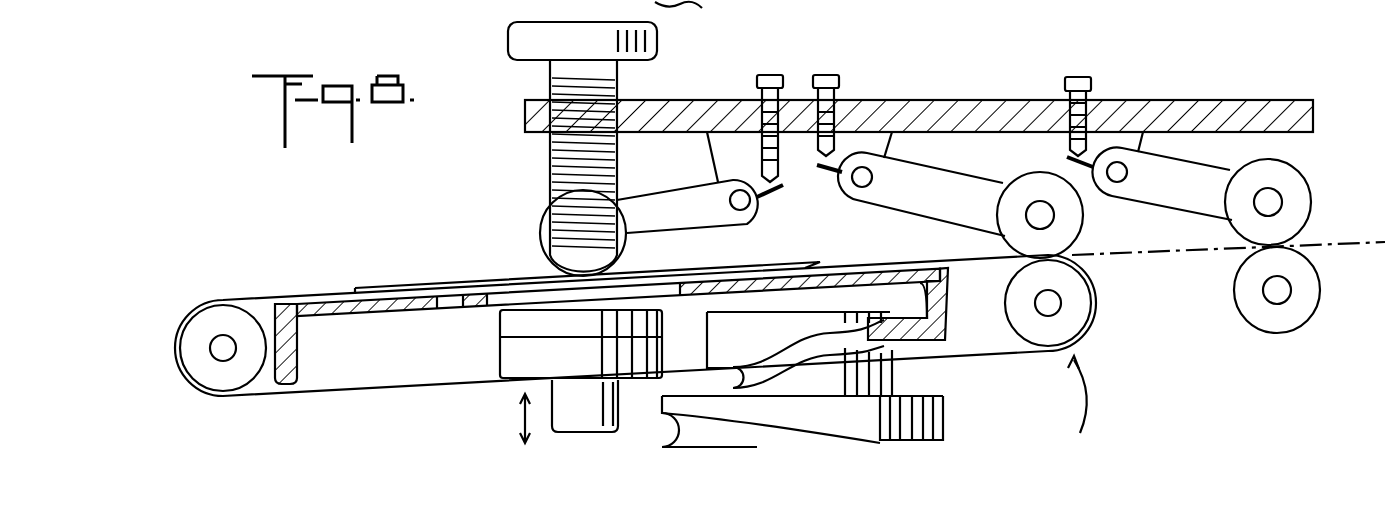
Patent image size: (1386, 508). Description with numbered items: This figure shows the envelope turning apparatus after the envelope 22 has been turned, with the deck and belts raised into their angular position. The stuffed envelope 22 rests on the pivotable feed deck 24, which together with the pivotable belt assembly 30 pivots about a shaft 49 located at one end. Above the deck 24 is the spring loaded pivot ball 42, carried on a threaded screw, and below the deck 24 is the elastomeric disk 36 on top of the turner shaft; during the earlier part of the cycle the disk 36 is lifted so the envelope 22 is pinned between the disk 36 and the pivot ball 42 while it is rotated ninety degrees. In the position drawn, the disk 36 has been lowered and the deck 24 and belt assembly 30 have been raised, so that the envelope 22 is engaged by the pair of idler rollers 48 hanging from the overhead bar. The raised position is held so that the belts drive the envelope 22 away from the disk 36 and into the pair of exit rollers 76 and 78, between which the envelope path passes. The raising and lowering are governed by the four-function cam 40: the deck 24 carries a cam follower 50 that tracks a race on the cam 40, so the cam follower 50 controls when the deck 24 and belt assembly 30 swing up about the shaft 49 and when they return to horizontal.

The envelope 22 is at (404, 285).
The pivotable feed deck 24 is at (378, 312).
The pivotable belt assembly 30 is at (985, 352).
The elastomeric disk 36 is at (500, 328).
The four-function cam 40 is at (947, 417).
The spring loaded pivot ball 42 is at (549, 253).
The idler rollers 48 is at (1033, 176).
The shaft 49 is at (222, 341).
The cam follower 50 is at (878, 328).
The exit roller 76 is at (1309, 194).
The exit roller 78 is at (1318, 301).